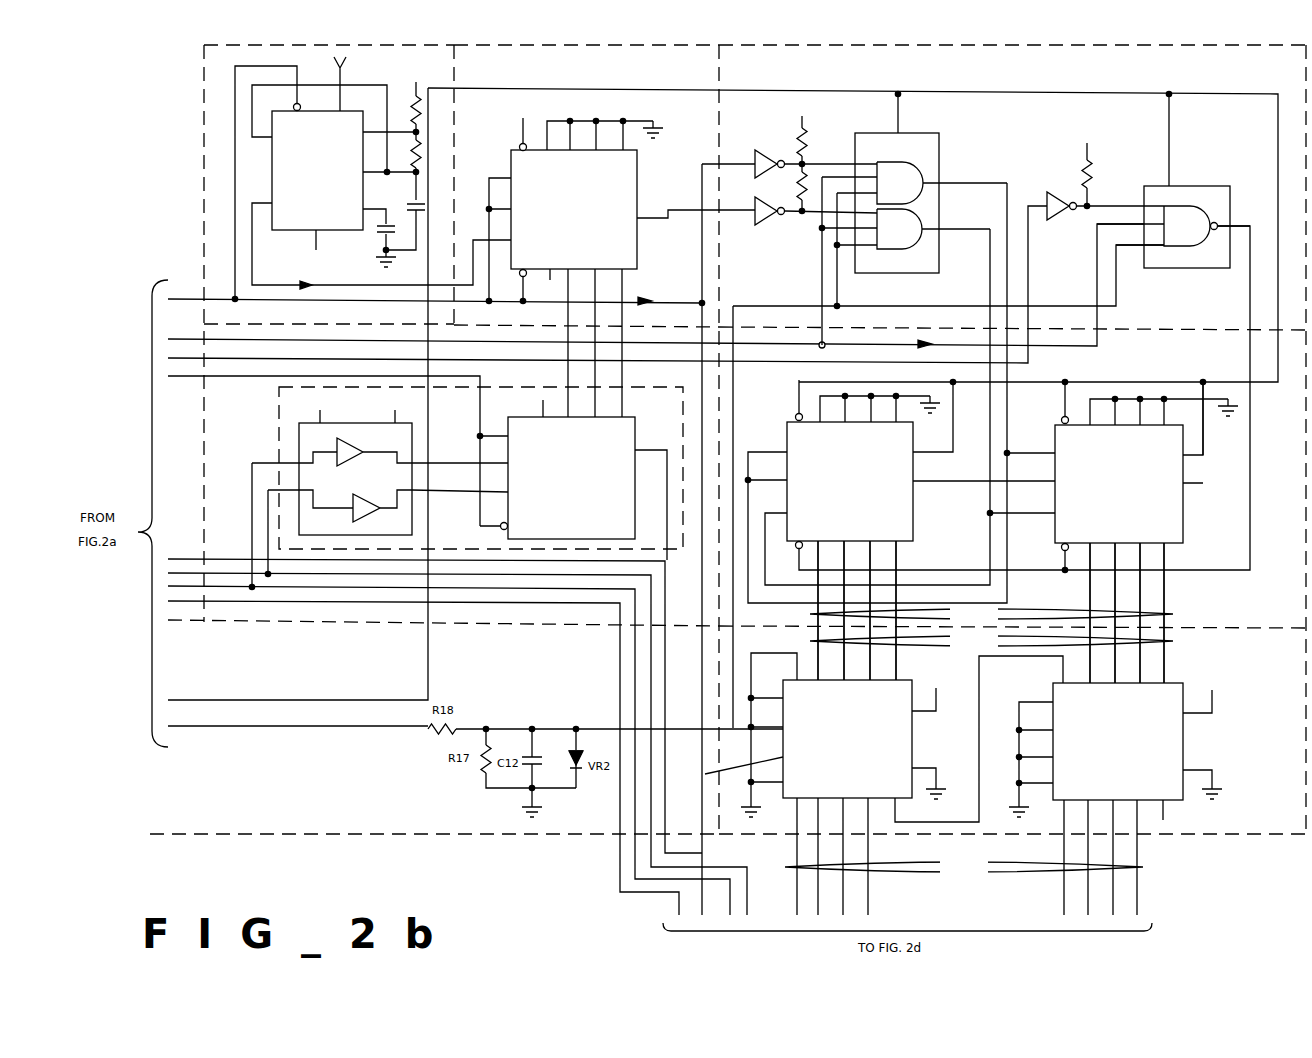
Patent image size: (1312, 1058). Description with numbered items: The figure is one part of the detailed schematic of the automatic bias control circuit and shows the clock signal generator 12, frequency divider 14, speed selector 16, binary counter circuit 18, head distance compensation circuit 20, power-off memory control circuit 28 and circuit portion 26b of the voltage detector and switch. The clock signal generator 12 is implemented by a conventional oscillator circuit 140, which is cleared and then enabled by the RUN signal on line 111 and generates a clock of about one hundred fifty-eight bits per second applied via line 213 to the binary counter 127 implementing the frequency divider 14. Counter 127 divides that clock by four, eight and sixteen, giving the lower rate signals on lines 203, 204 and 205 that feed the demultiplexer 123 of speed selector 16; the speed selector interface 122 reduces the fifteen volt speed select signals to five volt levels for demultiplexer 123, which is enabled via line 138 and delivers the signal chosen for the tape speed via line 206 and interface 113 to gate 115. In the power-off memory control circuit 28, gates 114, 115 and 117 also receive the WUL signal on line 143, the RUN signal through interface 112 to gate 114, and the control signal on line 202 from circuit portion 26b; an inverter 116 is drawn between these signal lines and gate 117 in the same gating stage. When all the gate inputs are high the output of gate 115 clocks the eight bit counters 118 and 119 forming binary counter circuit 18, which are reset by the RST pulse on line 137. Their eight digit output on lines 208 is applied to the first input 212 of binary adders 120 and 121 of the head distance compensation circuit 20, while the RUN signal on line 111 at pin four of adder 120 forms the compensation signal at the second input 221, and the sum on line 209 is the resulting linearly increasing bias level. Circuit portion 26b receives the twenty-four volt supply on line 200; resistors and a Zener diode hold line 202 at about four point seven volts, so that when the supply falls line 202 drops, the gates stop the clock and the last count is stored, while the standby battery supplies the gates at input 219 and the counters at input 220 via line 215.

The clock signal generator 12 is at (329, 333).
The frequency divider 14 is at (586, 440).
The power-off memory control circuit 28 is at (1012, 440).
The speed selector 16 is at (481, 468).
The binary counter circuit 18 is at (1012, 488).
The head distance compensation circuit 20 is at (1012, 741).
The portion of voltage detector and switch 26b is at (434, 727).
The oscillator circuit 140 is at (330, 170).
The line 213 is at (257, 198).
The binary counter 127 is at (574, 201).
The line 111 is at (183, 299).
The line 143 is at (183, 339).
The line 137 is at (168, 358).
The line 138 is at (179, 378).
The line 215 is at (527, 89).
The input 219 is at (900, 93).
The input 220 is at (1213, 379).
The line 206 is at (668, 209).
The line 202 is at (899, 309).
The line 200 is at (188, 730).
The second input 221 is at (726, 769).
The line 203 is at (565, 400).
The line 204 is at (593, 400).
The line 205 is at (624, 400).
The demultiplexer 123 is at (578, 480).
The speed selector interface 122 is at (363, 423).
The binary counter 118 is at (997, 431).
The binary counter 119 is at (1137, 532).
The binary adder 120 is at (902, 728).
The binary adder 121 is at (1115, 729).
The gate 114 is at (896, 219).
The gate 115 is at (887, 228).
The interface 112 is at (772, 143).
The interface 113 is at (776, 229).
The inverter 116 is at (1055, 194).
The gate 117 is at (1173, 181).
The line 208 is at (991, 614).
The first input 212 is at (991, 641).
The line 209 is at (964, 867).